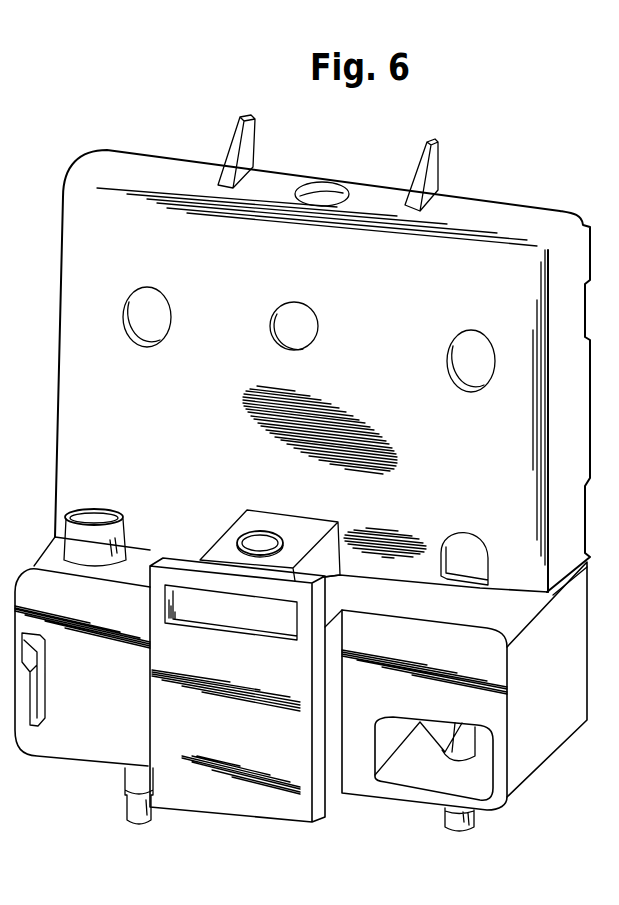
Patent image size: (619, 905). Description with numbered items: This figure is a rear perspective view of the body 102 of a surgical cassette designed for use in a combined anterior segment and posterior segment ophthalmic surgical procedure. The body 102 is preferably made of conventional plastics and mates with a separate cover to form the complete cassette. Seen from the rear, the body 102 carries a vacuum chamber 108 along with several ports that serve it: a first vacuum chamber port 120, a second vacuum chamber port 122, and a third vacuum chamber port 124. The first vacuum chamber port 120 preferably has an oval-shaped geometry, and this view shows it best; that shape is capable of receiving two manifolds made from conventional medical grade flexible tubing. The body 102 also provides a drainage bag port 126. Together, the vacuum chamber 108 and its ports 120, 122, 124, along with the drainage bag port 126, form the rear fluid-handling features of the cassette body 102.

The body 102 is at (400, 384).
The vacuum chamber 108 is at (266, 677).
The first vacuum chamber port 120 is at (112, 508).
The second vacuum chamber port 122 is at (263, 536).
The third vacuum chamber port 124 is at (125, 798).
The drainage bag port 126 is at (443, 815).